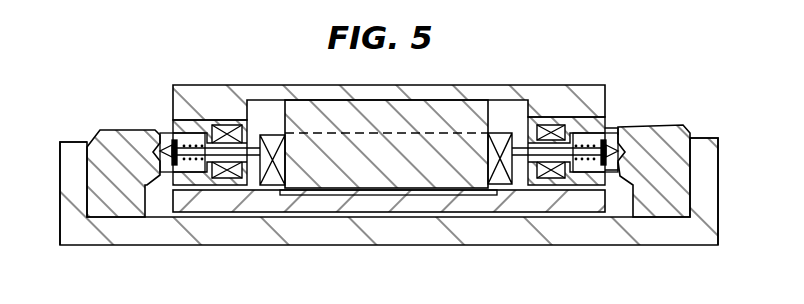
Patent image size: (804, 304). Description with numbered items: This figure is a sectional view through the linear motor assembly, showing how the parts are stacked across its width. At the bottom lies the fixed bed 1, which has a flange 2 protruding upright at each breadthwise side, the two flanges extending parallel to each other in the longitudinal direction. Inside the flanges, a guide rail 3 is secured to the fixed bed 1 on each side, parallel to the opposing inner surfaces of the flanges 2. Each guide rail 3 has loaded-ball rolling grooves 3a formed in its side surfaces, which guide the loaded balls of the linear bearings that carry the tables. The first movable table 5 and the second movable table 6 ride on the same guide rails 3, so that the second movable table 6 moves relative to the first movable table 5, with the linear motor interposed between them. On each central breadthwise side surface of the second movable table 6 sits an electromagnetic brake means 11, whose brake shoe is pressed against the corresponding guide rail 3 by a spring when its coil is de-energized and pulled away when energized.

The fixed bed 1 is at (502, 227).
The flange 2 is at (60, 183).
The guide rail 3 is at (112, 145).
The loaded-ball rolling groove 3a is at (628, 127).
The first movable table 5 is at (258, 205).
The second movable table 6 is at (508, 84).
The electromagnetic brake means 11 is at (172, 128).